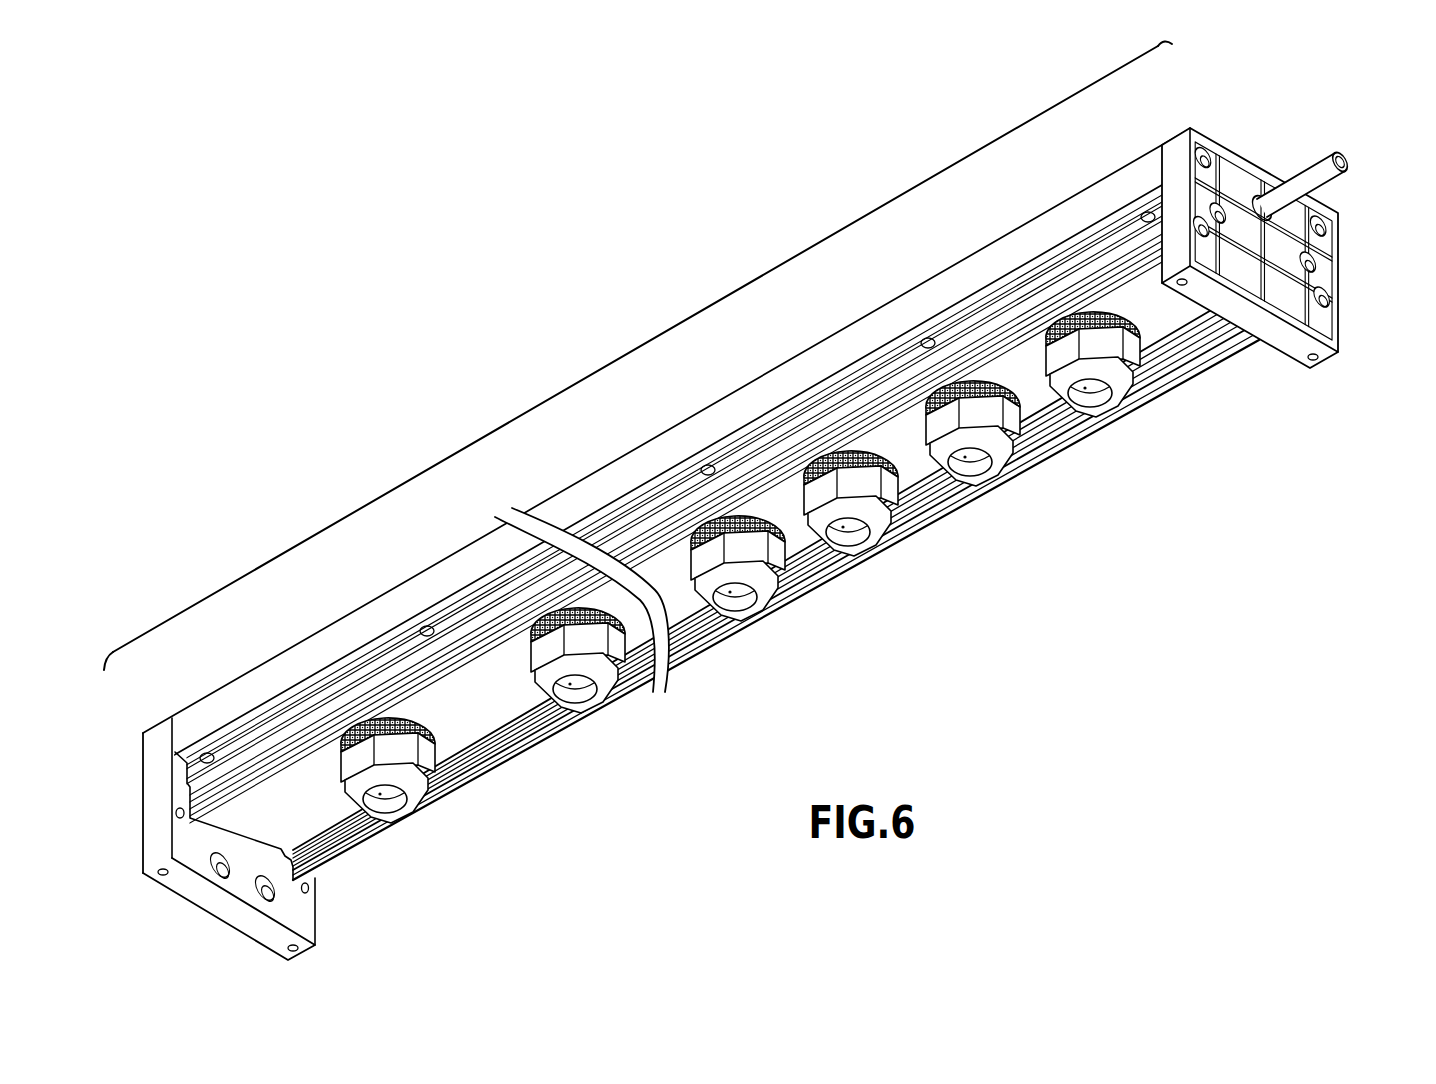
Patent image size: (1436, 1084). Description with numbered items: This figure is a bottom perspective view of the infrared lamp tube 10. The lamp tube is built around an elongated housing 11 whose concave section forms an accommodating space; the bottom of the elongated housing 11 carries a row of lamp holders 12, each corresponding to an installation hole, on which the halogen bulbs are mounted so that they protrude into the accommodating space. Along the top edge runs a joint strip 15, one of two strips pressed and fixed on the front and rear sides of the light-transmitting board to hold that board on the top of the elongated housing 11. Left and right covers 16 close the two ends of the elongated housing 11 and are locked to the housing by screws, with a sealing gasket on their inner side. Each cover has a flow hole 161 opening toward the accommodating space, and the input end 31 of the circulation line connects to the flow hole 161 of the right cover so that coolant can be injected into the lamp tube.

The infrared lamp tube 10 is at (634, 351).
The elongated housing 11 is at (942, 510).
The lamp holder 12 is at (1129, 366).
The joint strip 15 is at (898, 318).
The left and right covers 16 is at (156, 740).
The flow hole 161 is at (1264, 218).
The input end 31 is at (1350, 164).